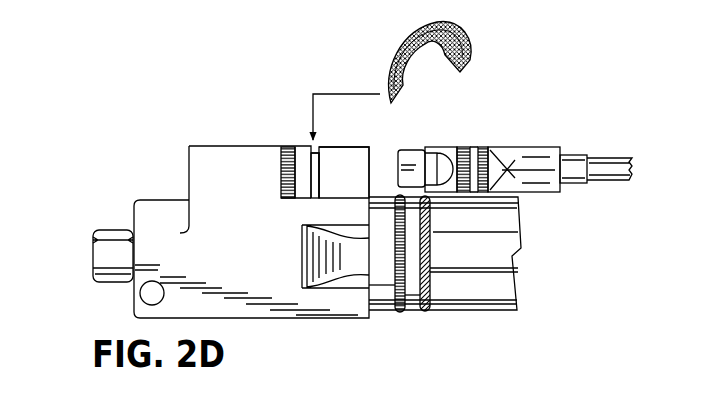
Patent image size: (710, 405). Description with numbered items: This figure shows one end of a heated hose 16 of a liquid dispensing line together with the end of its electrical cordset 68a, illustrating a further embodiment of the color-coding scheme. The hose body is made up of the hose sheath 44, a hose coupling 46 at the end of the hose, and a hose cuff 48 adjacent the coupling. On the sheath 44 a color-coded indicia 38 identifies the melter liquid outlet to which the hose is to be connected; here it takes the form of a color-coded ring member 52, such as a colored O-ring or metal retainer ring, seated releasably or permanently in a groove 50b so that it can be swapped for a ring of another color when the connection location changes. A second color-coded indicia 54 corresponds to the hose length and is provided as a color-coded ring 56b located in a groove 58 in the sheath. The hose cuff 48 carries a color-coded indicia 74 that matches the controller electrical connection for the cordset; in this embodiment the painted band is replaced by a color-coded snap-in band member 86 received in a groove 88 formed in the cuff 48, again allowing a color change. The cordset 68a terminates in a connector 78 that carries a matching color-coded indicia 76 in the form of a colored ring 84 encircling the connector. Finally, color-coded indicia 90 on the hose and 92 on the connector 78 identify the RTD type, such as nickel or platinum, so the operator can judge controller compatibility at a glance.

The hose 16 is at (101, 148).
The color-coded indicia 38 is at (448, 232).
The hose sheath 44 is at (483, 312).
The hose coupling 46 is at (92, 244).
The hose cuff 48 is at (221, 276).
The groove 50b is at (428, 290).
The color-coded ring member 52 is at (430, 262).
The color-coded indicia 54 is at (390, 220).
The color-coded ring 56b is at (401, 300).
The groove 58 is at (394, 290).
The electrical cordset 68a is at (596, 140).
The color-coded indicia 74 is at (332, 156).
The color-coded indicia 76 is at (448, 161).
The connector 78 is at (550, 147).
The colored ring 84 is at (522, 193).
The snap-in band member 86 is at (462, 30).
The groove 88 is at (319, 178).
The color-coded indicia 90 is at (272, 165).
The color-coded indicia 92 is at (497, 162).